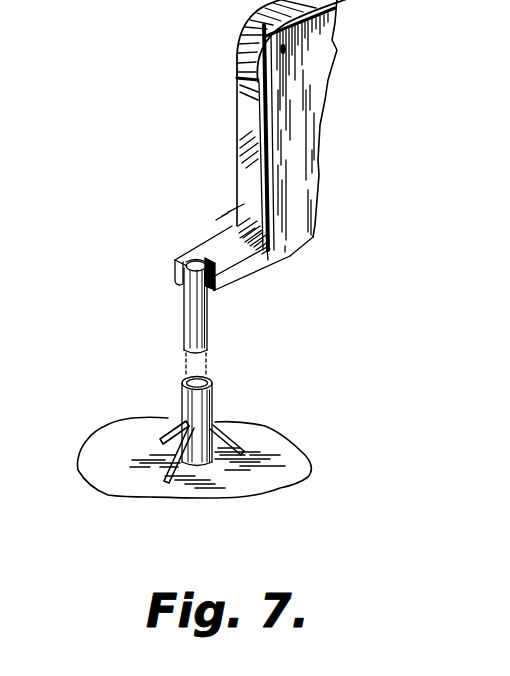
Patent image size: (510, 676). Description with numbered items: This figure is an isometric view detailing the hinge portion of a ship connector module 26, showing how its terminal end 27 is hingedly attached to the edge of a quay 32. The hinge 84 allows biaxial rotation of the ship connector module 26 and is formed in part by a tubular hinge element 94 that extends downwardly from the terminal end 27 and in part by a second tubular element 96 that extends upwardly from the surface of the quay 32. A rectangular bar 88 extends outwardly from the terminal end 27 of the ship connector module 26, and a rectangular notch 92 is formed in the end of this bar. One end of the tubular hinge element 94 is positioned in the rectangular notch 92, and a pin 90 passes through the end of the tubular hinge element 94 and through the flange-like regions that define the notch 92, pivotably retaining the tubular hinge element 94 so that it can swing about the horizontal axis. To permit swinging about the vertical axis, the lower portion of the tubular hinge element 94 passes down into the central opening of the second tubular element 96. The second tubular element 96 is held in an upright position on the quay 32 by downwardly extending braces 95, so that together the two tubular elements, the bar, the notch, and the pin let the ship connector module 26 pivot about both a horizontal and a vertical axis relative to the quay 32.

The ship connector module 26 is at (306, 168).
The terminal end 27 is at (232, 210).
The quay 32 is at (297, 468).
The hinge 84 is at (229, 344).
The rectangular bar 88 is at (212, 233).
The pin 90 is at (211, 280).
The rectangular notch 92 is at (227, 248).
The tubular hinge element 94 is at (186, 337).
The braces 95 is at (177, 423).
The second tubular element 96 is at (242, 420).